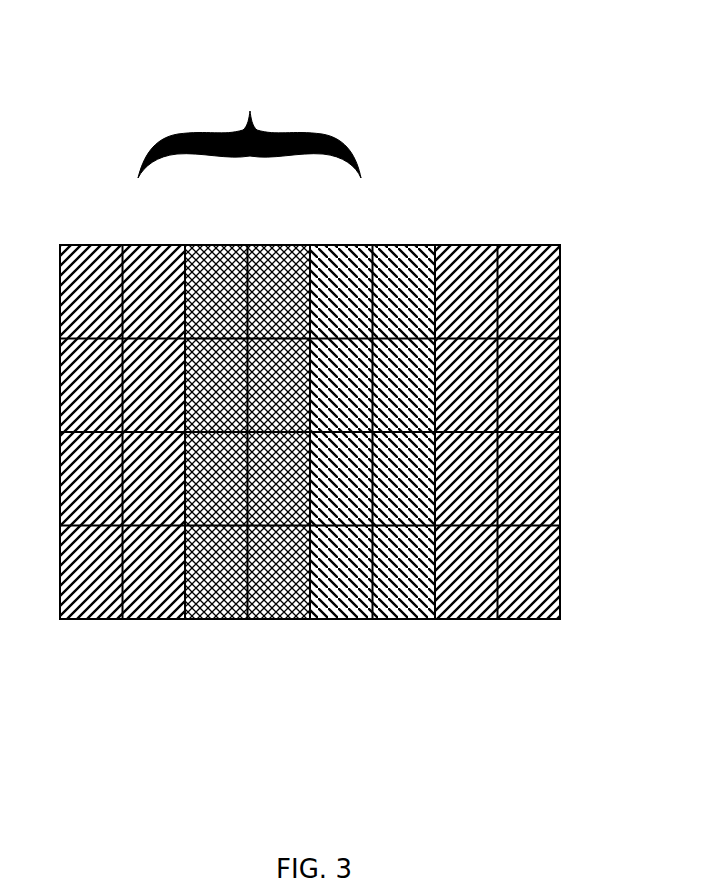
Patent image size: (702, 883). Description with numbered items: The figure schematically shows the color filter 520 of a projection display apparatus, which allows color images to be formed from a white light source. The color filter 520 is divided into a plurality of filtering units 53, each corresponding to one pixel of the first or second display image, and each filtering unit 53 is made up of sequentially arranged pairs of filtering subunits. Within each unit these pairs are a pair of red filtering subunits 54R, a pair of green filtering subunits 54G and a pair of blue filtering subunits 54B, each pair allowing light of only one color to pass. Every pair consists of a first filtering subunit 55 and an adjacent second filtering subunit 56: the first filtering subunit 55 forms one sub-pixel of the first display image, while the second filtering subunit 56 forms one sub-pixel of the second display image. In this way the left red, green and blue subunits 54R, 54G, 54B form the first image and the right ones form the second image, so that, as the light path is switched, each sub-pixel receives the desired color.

The color filter 520 is at (250, 31).
The filtering unit 53 is at (249, 132).
The red filtering subunits 54R is at (146, 223).
The green filtering subunits 54G is at (270, 223).
The blue filtering subunits 54B is at (395, 223).
The first filtering subunit 55 is at (333, 595).
The second filtering subunit 56 is at (398, 595).